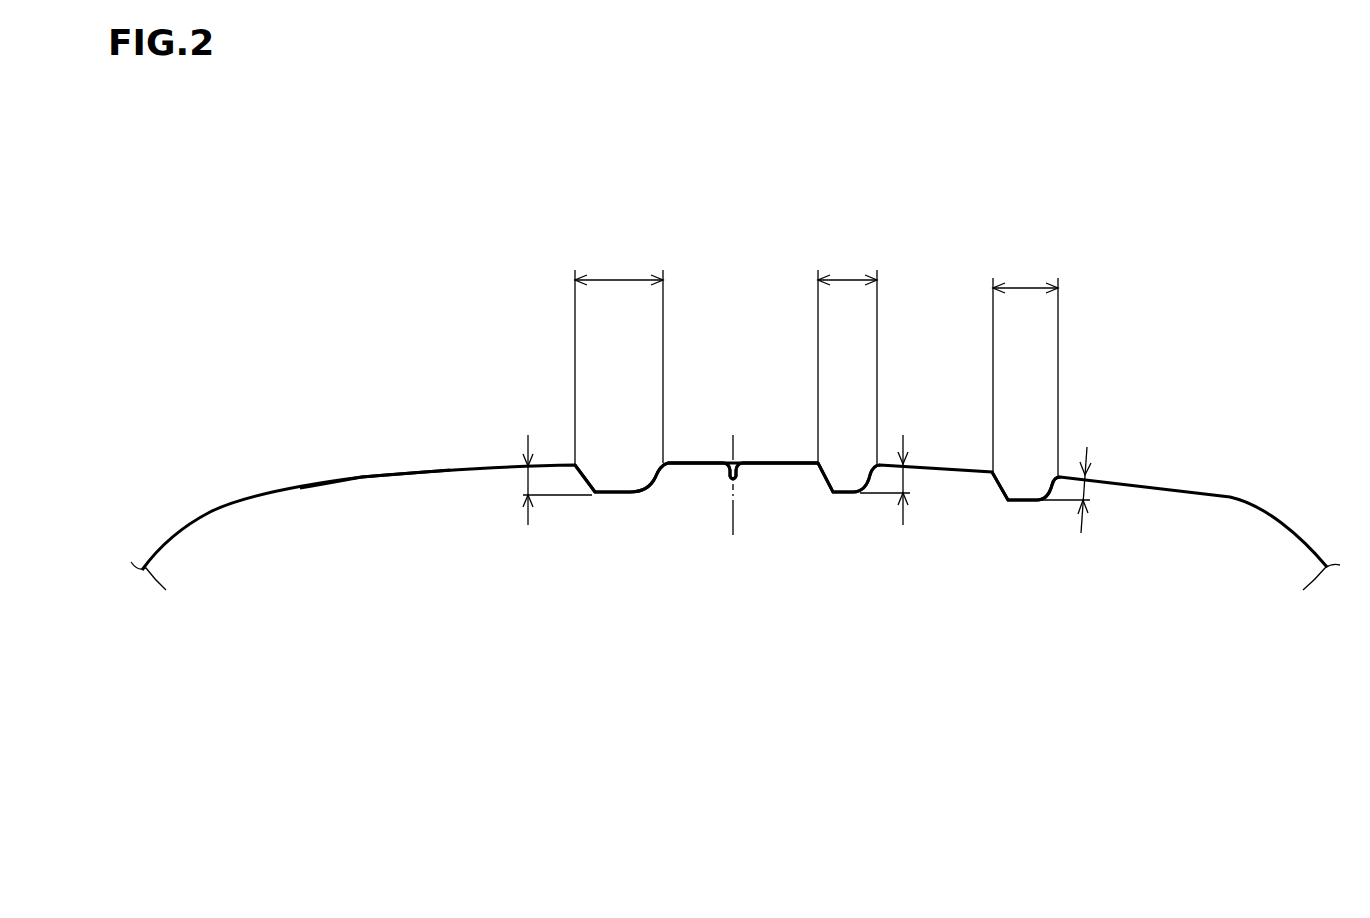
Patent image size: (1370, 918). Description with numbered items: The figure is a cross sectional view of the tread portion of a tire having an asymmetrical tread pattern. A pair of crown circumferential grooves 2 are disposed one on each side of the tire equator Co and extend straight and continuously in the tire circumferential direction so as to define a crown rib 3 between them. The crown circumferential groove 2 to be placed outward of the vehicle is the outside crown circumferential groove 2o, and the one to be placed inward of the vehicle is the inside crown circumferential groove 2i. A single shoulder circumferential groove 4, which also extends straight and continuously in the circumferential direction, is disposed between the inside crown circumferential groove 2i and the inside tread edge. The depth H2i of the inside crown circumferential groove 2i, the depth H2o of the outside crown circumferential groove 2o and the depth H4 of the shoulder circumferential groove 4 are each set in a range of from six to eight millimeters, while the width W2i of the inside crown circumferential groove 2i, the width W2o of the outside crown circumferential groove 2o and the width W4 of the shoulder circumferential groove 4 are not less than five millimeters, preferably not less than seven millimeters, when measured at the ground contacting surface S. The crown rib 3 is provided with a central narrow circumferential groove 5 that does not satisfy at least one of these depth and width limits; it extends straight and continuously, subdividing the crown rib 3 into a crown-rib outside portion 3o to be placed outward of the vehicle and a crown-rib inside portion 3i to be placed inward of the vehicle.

The crown circumferential groove 2 is at (1177, 418).
The ground contacting surface S is at (362, 477).
The outside crown circumferential groove 2o is at (617, 460).
The inside crown circumferential groove 2i is at (847, 460).
The crown rib 3 is at (785, 312).
The crown-rib outside portion 3o is at (698, 473).
The crown-rib inside portion 3i is at (768, 473).
The shoulder circumferential groove 4 is at (1025, 470).
The central narrow circumferential groove 5 is at (728, 455).
The tire equator Co is at (734, 500).
The width of the outside crown circumferential groove W2o is at (624, 355).
The width of the inside crown circumferential groove W2i is at (855, 355).
The width of the shoulder circumferential groove W4 is at (1032, 366).
The depth of the outside crown circumferential groove H2o is at (528, 478).
The depth of the inside crown circumferential groove H2i is at (905, 478).
The depth of the shoulder circumferential groove H4 is at (1085, 487).